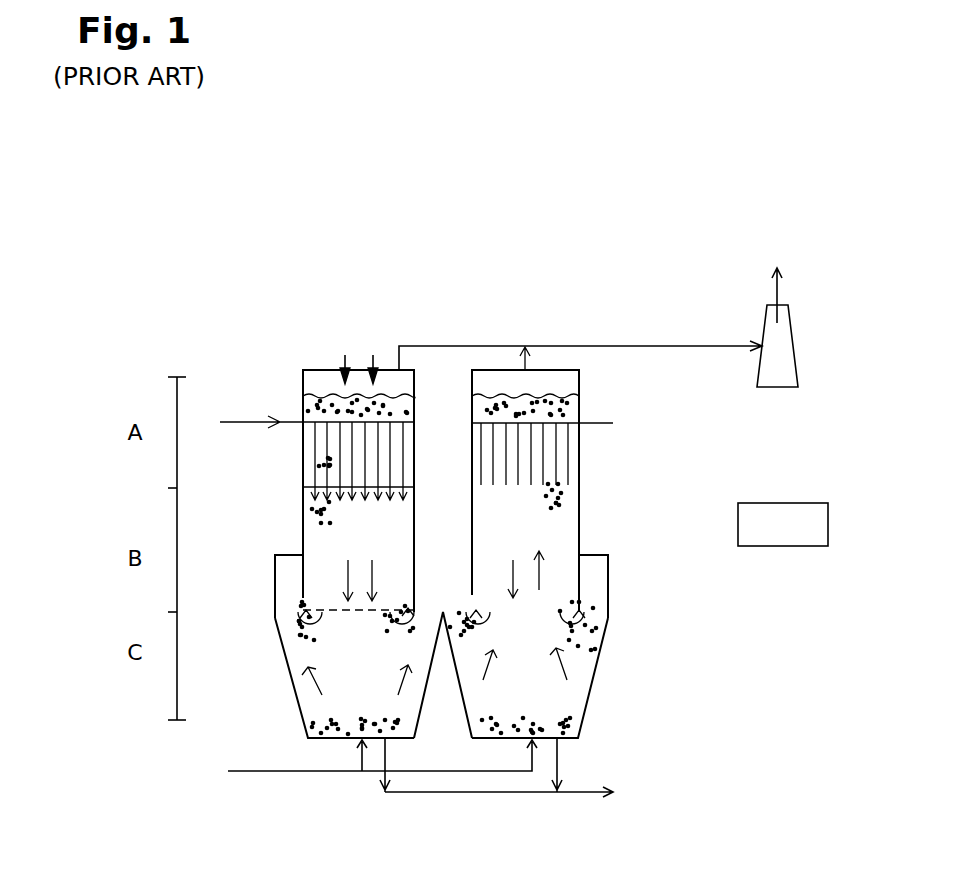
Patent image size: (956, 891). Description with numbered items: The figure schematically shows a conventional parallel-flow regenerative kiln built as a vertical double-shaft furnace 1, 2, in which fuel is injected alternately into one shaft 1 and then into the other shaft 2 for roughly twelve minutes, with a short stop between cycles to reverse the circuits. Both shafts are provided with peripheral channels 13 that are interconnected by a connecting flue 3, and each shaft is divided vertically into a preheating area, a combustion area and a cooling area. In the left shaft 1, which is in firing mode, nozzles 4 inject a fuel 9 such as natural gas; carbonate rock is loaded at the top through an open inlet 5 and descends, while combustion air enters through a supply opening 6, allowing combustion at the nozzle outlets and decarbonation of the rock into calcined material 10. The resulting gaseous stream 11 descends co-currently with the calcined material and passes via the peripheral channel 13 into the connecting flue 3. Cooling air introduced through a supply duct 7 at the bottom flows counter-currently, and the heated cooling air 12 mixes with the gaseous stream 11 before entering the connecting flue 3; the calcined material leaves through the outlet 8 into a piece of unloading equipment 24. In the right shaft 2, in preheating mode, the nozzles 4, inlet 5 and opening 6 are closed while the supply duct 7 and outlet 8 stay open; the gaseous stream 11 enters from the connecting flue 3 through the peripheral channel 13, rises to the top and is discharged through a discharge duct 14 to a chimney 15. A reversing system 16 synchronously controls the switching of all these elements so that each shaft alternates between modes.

The shaft 1 is at (272, 500).
The shaft 2 is at (612, 469).
The connecting flue 3 is at (445, 594).
The nozzles 4 is at (335, 452).
The inlet 5 is at (373, 356).
The supply opening 6 is at (345, 356).
The supply duct 7 is at (325, 771).
The outlet 8 is at (383, 741).
The fuel 9 is at (257, 420).
The calcined material 10 is at (348, 560).
The gaseous stream 11 is at (372, 562).
The heated cooling air 12 is at (310, 690).
The peripheral channels 13 is at (288, 571).
The discharge duct 14 is at (568, 345).
The chimney 15 is at (763, 325).
The reversing system 16 is at (769, 538).
The unloading equipment 24 is at (478, 795).